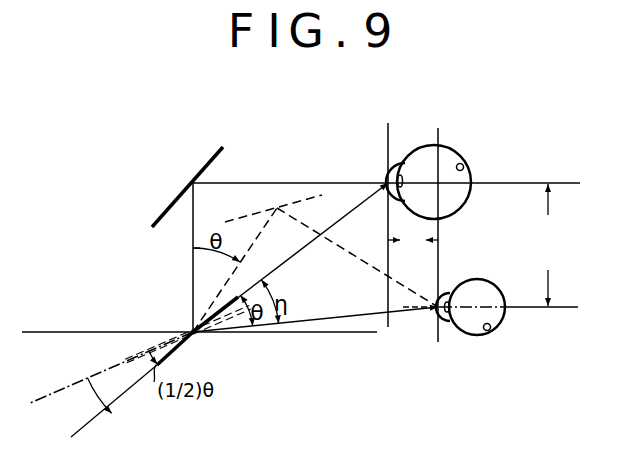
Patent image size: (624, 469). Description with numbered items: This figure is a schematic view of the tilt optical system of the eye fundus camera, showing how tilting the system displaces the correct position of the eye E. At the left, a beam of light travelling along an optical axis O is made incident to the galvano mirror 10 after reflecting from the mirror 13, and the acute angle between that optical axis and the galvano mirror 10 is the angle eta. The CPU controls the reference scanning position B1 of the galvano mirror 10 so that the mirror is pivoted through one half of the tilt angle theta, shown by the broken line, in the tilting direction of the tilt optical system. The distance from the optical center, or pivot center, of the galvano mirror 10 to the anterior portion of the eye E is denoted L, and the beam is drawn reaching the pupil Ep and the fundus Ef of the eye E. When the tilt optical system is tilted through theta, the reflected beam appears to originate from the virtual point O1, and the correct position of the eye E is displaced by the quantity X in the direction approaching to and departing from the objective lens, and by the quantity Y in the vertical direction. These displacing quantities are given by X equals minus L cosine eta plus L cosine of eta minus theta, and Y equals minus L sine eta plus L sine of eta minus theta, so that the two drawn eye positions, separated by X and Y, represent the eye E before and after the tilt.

The galvano mirror 10 is at (196, 337).
The reflecting mirror 13 is at (175, 199).
The eye E is at (449, 221).
The pupil of eye Ep is at (431, 239).
The fovea of eye Ef is at (488, 254).
The distance from optical center of galvano mirror to anterior portion of eye L is at (315, 257).
The optical axis O is at (512, 308).
The virtual reflection point O1 is at (395, 284).
The displacing quantity in the direction approaching to and departing from the objec X is at (413, 240).
The displacing quantity of the eye in the vertical direction Y is at (547, 245).
The reference scanning position B1 is at (112, 413).